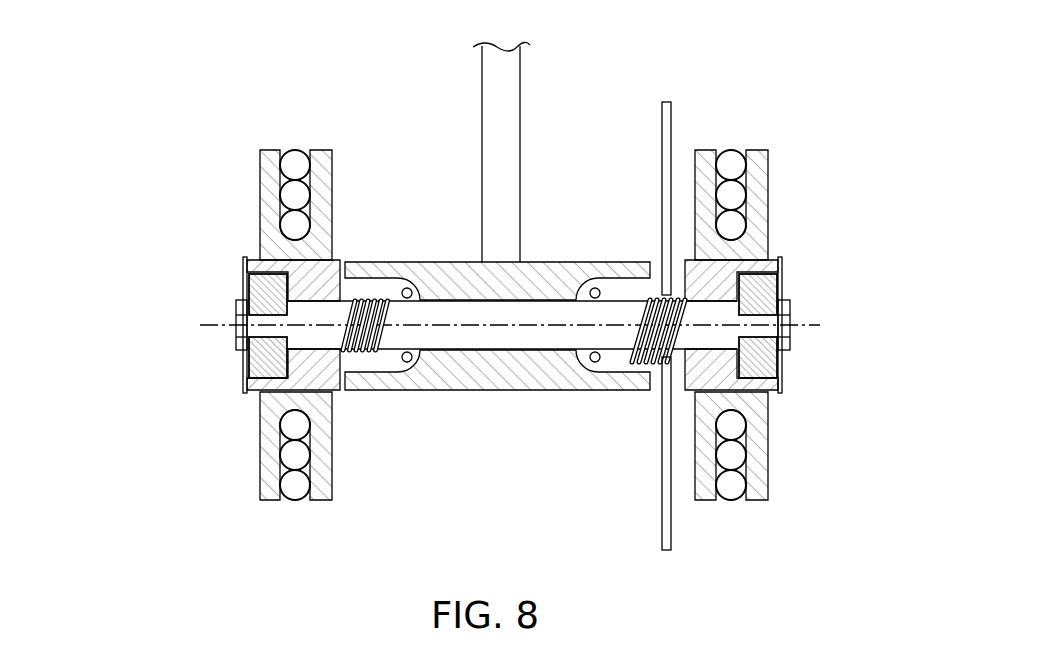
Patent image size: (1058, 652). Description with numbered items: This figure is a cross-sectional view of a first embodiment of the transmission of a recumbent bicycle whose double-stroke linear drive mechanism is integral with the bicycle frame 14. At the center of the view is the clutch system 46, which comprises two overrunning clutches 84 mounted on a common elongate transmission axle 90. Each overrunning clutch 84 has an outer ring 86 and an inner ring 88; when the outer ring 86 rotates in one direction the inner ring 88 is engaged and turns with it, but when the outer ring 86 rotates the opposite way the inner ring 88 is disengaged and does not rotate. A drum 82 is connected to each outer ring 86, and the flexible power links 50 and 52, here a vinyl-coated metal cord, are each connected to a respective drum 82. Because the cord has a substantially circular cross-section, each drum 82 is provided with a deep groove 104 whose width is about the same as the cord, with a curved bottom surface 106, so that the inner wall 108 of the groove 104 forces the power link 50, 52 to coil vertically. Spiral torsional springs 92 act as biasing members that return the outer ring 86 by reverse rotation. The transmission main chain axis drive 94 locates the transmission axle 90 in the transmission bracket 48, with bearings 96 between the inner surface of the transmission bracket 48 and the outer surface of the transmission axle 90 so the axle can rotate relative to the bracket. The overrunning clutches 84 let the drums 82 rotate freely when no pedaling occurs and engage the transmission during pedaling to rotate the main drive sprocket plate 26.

The bicycle frame 14 is at (482, 152).
The main drive sprocket plate 26 is at (662, 162).
The clutch system 46 is at (855, 64).
The transmission bracket 48 is at (543, 262).
The flexible power link 50 is at (294, 150).
The flexible power link 52 is at (731, 150).
The drum 82 is at (260, 205).
The overrunning clutch 84 is at (142, 146).
The outer ring 86 is at (268, 386).
The inner ring 88 is at (268, 292).
The transmission axle 90 is at (437, 318).
The spiral torsional spring 92 is at (365, 358).
The transmission main chain axis drive 94 is at (503, 394).
The bearings 96 is at (407, 362).
The deep groove 104 is at (293, 497).
The curved bottom surface 106 is at (292, 477).
The inner wall 108 is at (290, 411).